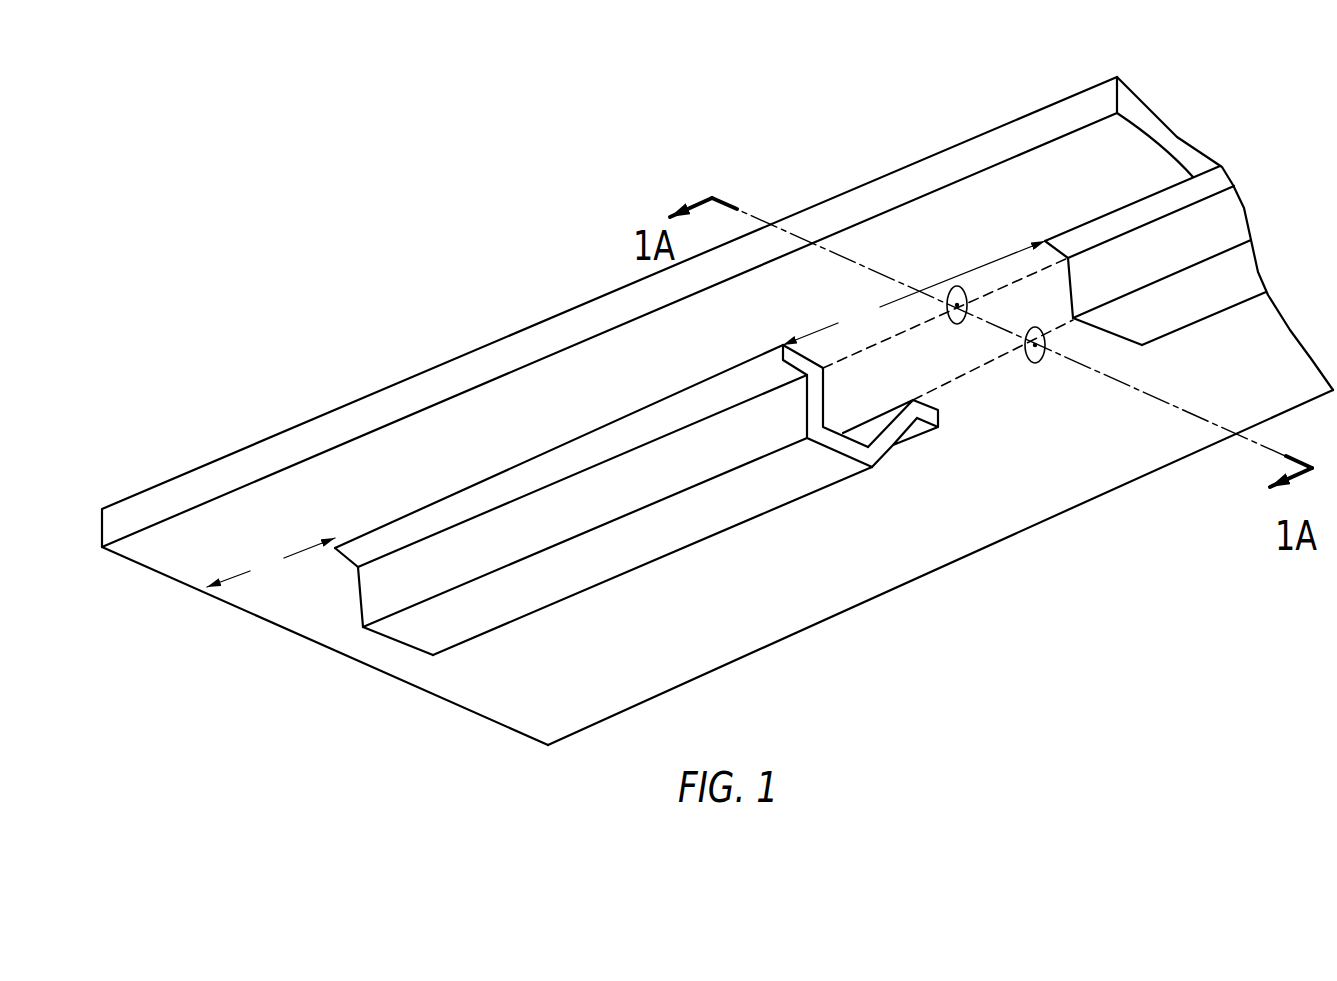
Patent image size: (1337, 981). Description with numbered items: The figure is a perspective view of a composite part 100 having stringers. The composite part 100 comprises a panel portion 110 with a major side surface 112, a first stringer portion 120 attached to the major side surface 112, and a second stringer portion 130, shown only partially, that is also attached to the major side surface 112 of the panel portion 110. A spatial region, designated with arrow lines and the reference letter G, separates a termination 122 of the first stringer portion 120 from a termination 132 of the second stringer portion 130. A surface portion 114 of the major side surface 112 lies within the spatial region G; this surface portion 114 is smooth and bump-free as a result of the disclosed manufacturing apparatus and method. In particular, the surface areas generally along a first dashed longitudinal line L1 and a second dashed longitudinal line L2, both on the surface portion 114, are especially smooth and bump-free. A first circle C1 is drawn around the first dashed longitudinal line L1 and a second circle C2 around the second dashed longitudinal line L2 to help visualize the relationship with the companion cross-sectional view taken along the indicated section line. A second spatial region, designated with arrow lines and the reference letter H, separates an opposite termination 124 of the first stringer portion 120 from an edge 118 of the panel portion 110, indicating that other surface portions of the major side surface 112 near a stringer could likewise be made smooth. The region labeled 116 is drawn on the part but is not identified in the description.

The composite part 100 is at (352, 132).
The panel portion 110 is at (193, 480).
The major side surface 112 is at (620, 386).
The surface portion 114 is at (941, 374).
The end face 116 is at (338, 617).
The edge 118 is at (242, 610).
The first stringer portion 120 is at (466, 641).
The termination 122 is at (780, 341).
The opposite termination 124 is at (335, 537).
The second stringer portion 130 is at (1246, 256).
The termination 132 is at (1043, 236).
The spatial region G is at (914, 293).
The spatial region H is at (271, 562).
The first circle C1 is at (967, 300).
The second circle C2 is at (1035, 363).
The first dashed longitudinal line L1 is at (1043, 266).
The second dashed longitudinal line L2 is at (963, 378).